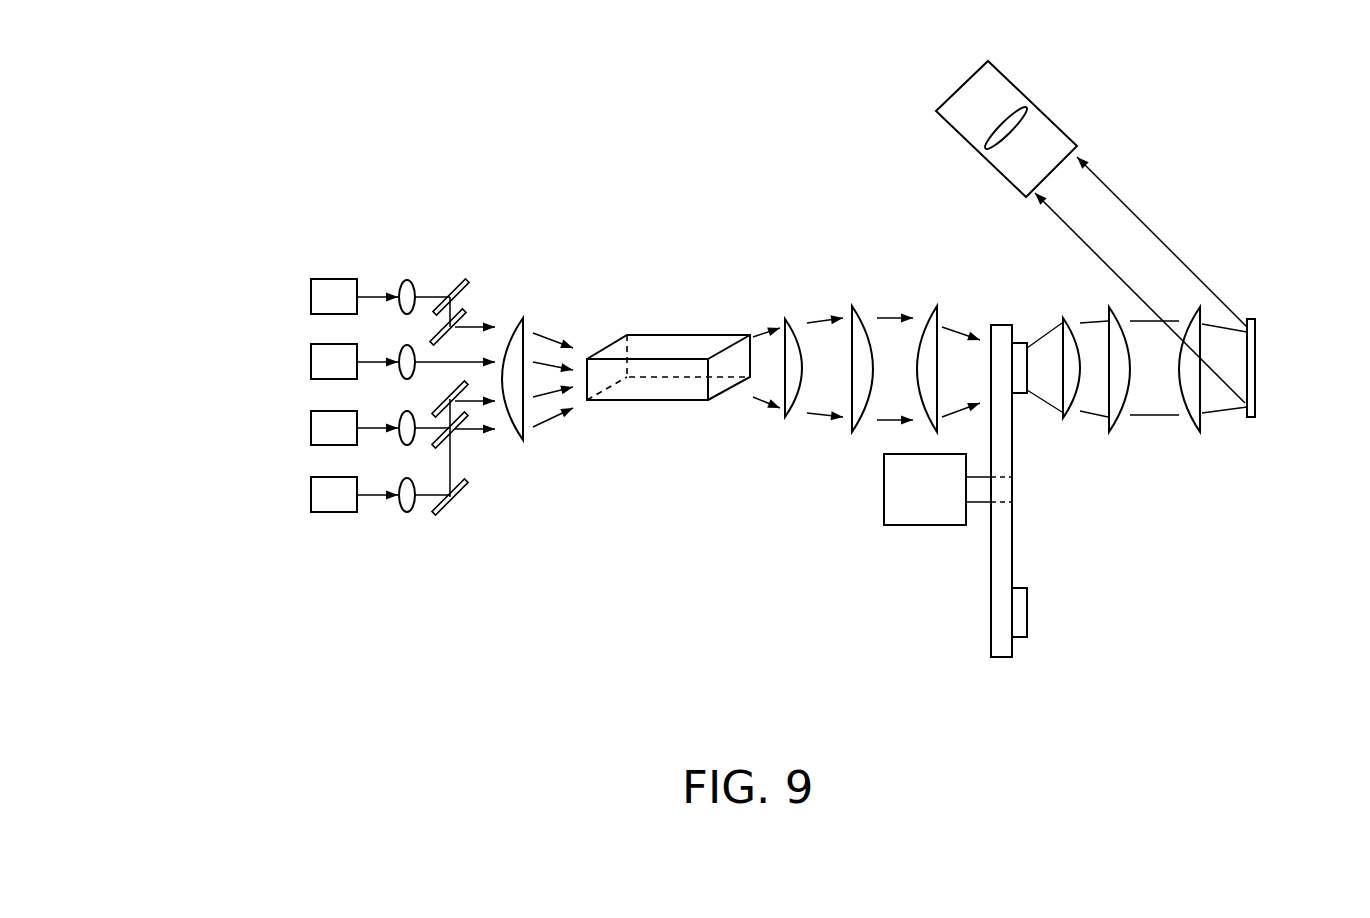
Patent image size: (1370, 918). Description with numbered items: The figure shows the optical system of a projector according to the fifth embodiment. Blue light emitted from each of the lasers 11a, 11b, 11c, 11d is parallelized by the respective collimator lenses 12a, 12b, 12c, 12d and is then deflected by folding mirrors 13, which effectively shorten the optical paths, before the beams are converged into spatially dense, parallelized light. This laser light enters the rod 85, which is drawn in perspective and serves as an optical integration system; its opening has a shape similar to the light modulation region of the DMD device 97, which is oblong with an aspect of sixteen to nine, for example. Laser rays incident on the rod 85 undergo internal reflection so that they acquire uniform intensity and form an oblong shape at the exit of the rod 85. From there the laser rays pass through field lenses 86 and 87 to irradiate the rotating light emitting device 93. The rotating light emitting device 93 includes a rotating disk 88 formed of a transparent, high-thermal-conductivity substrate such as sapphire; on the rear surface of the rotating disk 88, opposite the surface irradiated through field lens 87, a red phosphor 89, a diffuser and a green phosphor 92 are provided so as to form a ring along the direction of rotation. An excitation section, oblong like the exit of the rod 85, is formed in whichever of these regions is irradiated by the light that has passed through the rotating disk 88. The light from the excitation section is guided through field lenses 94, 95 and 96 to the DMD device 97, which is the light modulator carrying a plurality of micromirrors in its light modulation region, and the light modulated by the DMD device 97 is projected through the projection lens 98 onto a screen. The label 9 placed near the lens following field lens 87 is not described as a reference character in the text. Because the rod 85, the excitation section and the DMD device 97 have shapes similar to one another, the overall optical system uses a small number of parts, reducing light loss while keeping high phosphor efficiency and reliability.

The laser 11a is at (311, 297).
The laser 11b is at (311, 362).
The laser 11c is at (311, 428).
The laser 11d is at (311, 495).
The collimator lens 12a is at (407, 280).
The collimator lens 12b is at (405, 378).
The collimator lens 12c is at (405, 445).
The collimator lens 12d is at (407, 512).
The folding mirror 13 is at (462, 288).
The rod 85 is at (648, 402).
The field lens 86 is at (797, 318).
The field lens 87 is at (865, 305).
The lens 9 is at (930, 305).
The rotating disk 88 is at (997, 658).
The red phosphor 89 is at (1017, 342).
The green phosphor 92 is at (1027, 608).
The rotating light emitting device 93 is at (990, 583).
The field lens 94 is at (1067, 418).
The field lens 95 is at (1113, 432).
The field lens 96 is at (1192, 432).
The DMD device 97 is at (1250, 417).
The projection lens 98 is at (1007, 72).